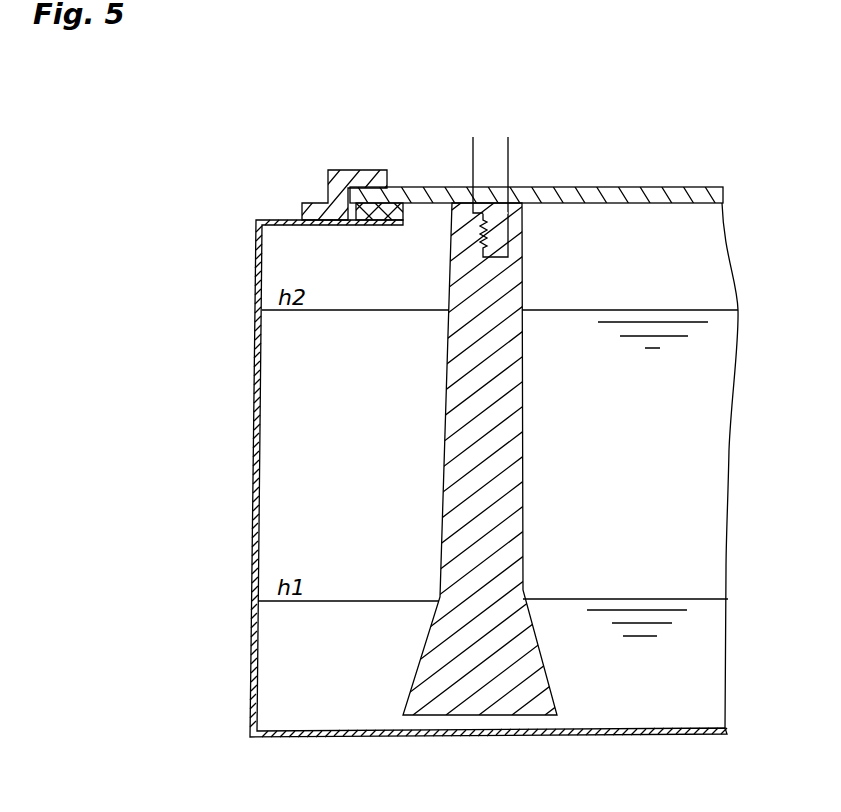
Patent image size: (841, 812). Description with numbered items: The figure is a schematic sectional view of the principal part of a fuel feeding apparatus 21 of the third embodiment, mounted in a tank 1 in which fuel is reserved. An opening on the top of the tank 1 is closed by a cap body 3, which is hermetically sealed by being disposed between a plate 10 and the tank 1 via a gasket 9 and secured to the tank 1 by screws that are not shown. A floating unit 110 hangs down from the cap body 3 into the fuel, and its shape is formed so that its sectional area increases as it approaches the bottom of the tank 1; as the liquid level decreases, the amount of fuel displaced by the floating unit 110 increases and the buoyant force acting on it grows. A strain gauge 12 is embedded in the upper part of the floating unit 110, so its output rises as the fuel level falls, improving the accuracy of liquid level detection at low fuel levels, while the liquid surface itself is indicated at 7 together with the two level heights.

The tank 1 is at (253, 463).
The cap body 3 is at (693, 187).
The liquid 7 is at (683, 309).
The gasket 9 is at (388, 203).
The plate 10 is at (345, 170).
The strain gauge 12 is at (500, 203).
The fuel feeding apparatus 21 is at (632, 167).
The floating unit 110 is at (533, 470).